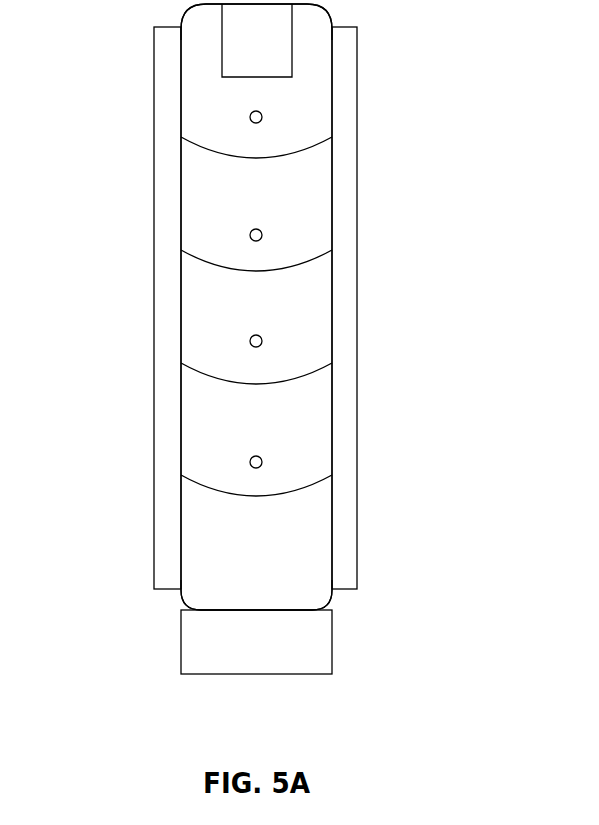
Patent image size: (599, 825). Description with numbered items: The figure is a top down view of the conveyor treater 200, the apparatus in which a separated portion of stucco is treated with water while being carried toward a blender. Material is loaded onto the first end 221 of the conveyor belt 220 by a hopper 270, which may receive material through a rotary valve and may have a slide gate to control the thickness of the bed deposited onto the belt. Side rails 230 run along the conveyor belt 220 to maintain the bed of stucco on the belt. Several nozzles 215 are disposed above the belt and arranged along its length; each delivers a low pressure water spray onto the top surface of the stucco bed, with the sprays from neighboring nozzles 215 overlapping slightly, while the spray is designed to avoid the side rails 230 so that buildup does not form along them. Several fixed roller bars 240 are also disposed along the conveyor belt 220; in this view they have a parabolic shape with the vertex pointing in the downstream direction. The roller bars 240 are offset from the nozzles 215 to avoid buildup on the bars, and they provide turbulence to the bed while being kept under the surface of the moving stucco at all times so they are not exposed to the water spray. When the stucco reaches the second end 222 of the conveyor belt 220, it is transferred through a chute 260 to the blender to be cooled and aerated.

The conveyor treater 200 is at (278, 370).
The nozzles 215 is at (249, 341).
The conveyor belt 220 is at (320, 560).
The first end of conveyor belt 221 is at (203, 32).
The second end of conveyor belt 222 is at (215, 592).
The side rails 230 is at (357, 157).
The roller bars 240 is at (310, 373).
The chute 260 is at (307, 665).
The hopper 270 is at (274, 22).